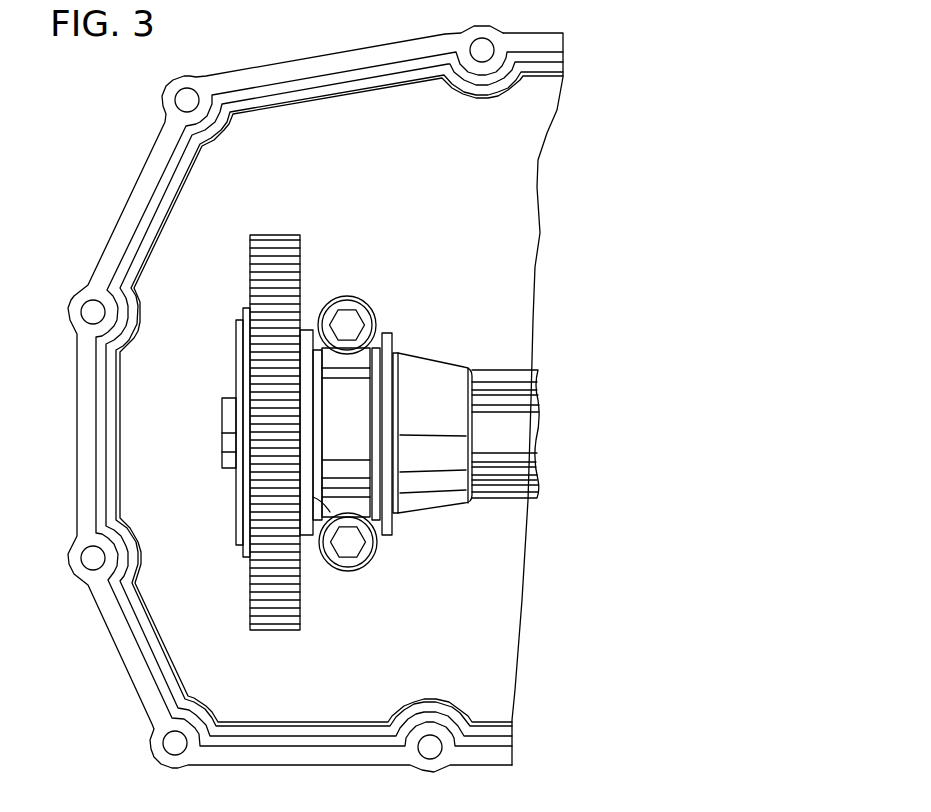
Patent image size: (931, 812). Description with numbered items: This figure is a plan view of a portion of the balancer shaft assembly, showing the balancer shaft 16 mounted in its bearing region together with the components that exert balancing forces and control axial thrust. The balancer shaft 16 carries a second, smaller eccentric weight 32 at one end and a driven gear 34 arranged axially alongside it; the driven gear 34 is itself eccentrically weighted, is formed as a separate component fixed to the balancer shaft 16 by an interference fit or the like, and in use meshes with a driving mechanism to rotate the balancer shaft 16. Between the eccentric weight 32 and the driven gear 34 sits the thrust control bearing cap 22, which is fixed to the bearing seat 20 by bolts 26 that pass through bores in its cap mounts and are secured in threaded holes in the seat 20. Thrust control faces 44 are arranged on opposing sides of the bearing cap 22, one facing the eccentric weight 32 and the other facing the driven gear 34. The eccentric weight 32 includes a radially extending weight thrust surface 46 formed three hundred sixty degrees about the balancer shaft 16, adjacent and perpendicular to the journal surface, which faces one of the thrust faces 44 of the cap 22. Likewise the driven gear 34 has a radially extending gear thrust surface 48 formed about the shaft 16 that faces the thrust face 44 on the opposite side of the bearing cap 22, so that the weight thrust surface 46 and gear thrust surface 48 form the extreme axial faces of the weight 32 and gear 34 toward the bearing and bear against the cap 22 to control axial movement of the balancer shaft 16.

The balancer shaft 16 is at (528, 473).
The bearing seat 20 is at (370, 568).
The thrust control bearing cap 22 is at (453, 376).
The bolts 26 is at (345, 320).
The second eccentric weight 32 is at (457, 375).
The driven gear 34 is at (278, 260).
The thrust control faces 44 is at (384, 348).
The weight thrust surface 46 is at (374, 540).
The gear thrust surface 48 is at (340, 568).